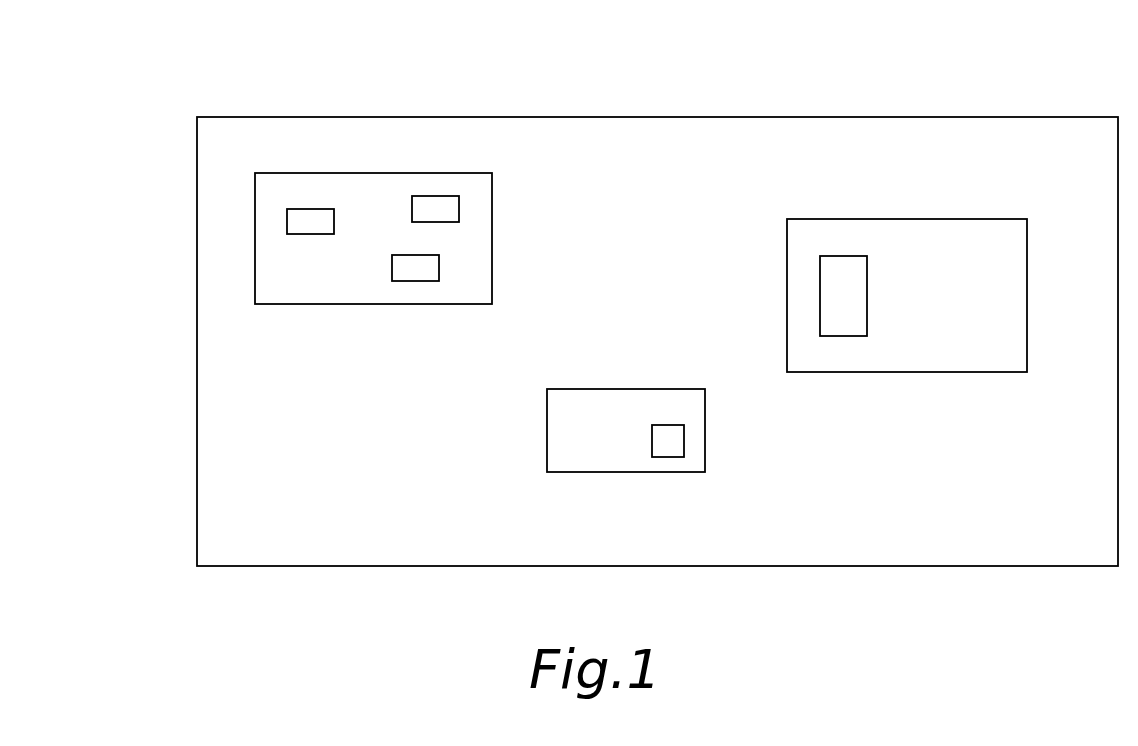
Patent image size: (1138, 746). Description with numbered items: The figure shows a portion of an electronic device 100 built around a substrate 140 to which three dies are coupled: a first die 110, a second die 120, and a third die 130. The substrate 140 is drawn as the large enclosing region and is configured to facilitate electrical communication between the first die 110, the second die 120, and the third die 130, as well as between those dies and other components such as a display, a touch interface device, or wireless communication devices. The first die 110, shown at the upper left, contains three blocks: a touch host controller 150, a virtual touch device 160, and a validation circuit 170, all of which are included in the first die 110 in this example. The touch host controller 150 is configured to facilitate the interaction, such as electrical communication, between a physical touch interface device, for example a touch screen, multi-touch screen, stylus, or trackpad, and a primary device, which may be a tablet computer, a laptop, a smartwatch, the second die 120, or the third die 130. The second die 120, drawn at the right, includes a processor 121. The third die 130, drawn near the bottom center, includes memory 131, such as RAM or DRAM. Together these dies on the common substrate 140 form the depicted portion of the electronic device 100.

The electronic device 100 is at (118, 50).
The substrate 140 is at (659, 117).
The first die 110 is at (374, 173).
The touch host controller 150 is at (302, 224).
The validation circuit 170 is at (442, 204).
The virtual touch device 160 is at (417, 272).
The second die 120 is at (909, 219).
The processor 121 is at (835, 293).
The third die 130 is at (625, 389).
The memory 131 is at (667, 453).